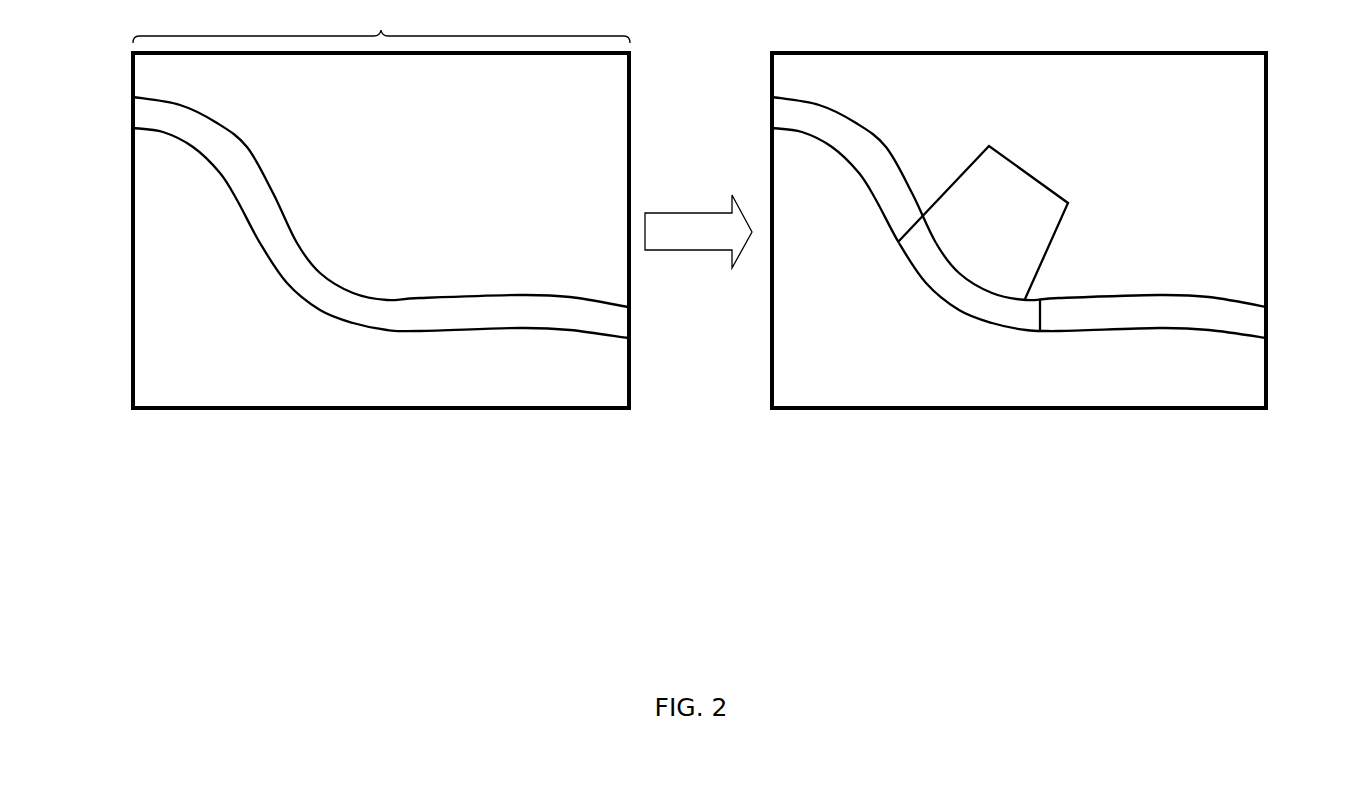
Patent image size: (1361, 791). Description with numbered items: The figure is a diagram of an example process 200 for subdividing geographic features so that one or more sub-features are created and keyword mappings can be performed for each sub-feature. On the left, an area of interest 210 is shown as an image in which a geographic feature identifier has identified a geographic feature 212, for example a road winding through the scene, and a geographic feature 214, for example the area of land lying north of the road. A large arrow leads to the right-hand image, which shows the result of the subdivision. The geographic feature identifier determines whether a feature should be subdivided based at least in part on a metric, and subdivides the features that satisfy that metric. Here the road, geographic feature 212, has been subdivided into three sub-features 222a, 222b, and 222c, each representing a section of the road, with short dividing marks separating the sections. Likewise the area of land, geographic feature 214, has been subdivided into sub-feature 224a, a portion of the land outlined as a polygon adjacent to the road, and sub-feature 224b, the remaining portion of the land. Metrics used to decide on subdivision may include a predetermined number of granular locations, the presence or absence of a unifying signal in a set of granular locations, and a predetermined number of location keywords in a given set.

The process 200 is at (159, 583).
The area of interest 210 is at (381, 206).
The geographic feature 212 is at (523, 320).
The geographic feature 214 is at (594, 125).
The sub-feature 222a is at (877, 177).
The sub-feature 222b is at (965, 302).
The sub-feature 222c is at (1133, 310).
The sub-feature 224a is at (1037, 208).
The sub-feature 224b is at (1203, 117).